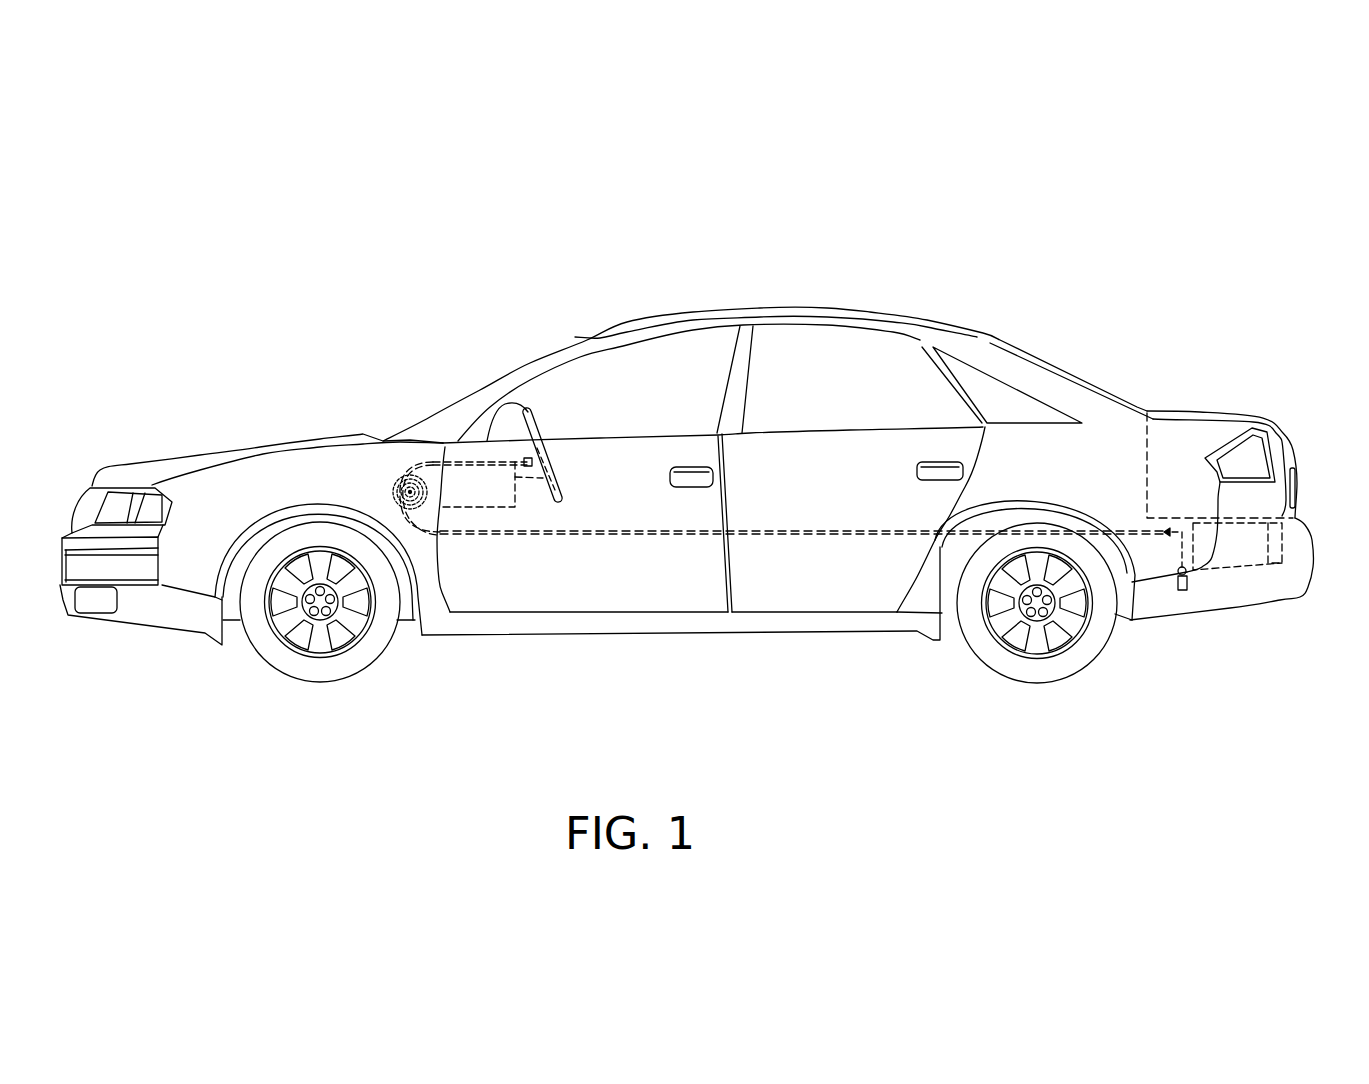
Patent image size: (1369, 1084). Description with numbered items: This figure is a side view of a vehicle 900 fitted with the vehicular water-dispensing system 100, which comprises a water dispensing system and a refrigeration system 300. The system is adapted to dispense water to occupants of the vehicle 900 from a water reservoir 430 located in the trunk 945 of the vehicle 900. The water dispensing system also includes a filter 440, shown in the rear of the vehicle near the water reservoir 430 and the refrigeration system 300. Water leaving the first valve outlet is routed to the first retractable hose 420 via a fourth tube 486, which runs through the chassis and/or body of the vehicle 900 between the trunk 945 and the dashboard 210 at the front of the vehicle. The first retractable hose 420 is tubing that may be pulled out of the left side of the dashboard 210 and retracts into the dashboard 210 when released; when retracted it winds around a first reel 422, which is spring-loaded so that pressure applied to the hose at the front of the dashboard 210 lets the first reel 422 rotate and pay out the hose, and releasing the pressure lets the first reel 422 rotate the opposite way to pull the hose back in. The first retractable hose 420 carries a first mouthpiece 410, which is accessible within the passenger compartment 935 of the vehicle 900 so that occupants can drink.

The vehicular water-dispensing system 100 is at (702, 440).
The dashboard 210 is at (380, 457).
The refrigeration system 300 is at (1283, 553).
The first mouthpiece 410 is at (529, 460).
The first retractable hose 420 is at (460, 463).
The first reel 422 is at (393, 492).
The water reservoir 430 is at (1230, 562).
The filter 440 is at (1180, 590).
The fourth tube 486 is at (553, 535).
The vehicle 900 is at (918, 325).
The passenger compartment 935 is at (640, 373).
The trunk 945 is at (1210, 433).